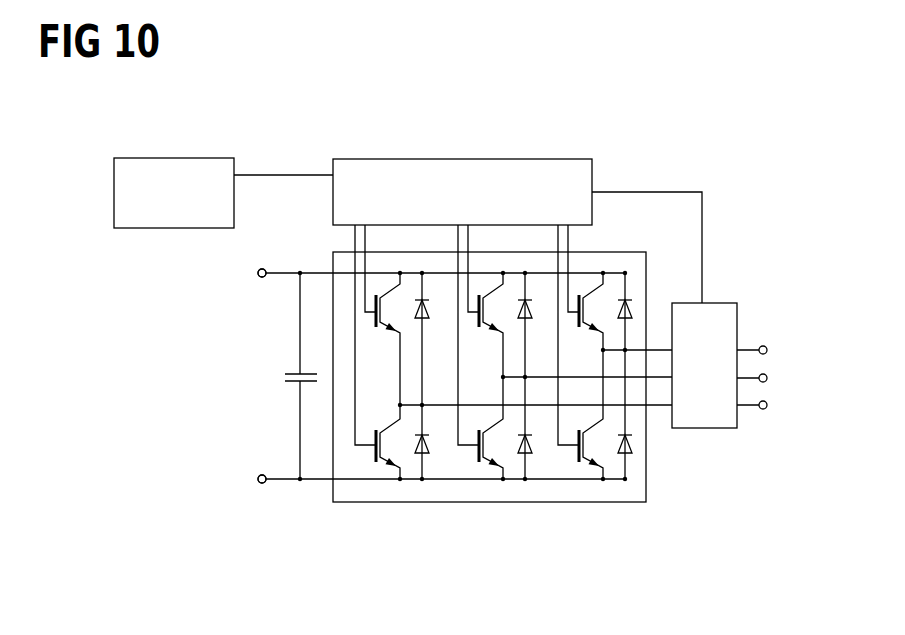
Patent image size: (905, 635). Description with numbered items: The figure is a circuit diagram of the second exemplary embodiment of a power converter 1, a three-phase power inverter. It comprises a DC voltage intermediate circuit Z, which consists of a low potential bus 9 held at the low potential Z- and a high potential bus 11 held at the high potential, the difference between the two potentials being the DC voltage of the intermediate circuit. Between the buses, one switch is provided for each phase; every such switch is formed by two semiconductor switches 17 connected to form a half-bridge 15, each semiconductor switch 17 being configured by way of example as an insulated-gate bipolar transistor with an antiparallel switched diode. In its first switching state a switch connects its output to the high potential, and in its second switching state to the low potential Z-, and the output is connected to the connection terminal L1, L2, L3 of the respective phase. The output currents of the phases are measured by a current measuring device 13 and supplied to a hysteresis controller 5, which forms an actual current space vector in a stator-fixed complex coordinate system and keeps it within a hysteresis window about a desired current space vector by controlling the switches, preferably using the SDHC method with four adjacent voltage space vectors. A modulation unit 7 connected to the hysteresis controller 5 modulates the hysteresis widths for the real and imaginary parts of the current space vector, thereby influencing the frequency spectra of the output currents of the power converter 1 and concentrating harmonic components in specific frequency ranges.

The power converter 1 is at (369, 129).
The hysteresis controller 5 is at (521, 158).
The modulation unit 7 is at (182, 156).
The low potential bus 9 is at (317, 484).
The high potential bus 11 is at (312, 270).
The current measuring device 13 is at (702, 430).
The half-bridge 15 is at (380, 388).
The semiconductor switch 17 is at (596, 280).
The DC voltage intermediate circuit Z is at (318, 262).
The low potential Z- is at (246, 489).
The connection terminal L1 is at (781, 351).
The connection terminal L2 is at (781, 379).
The connection terminal L3 is at (781, 406).